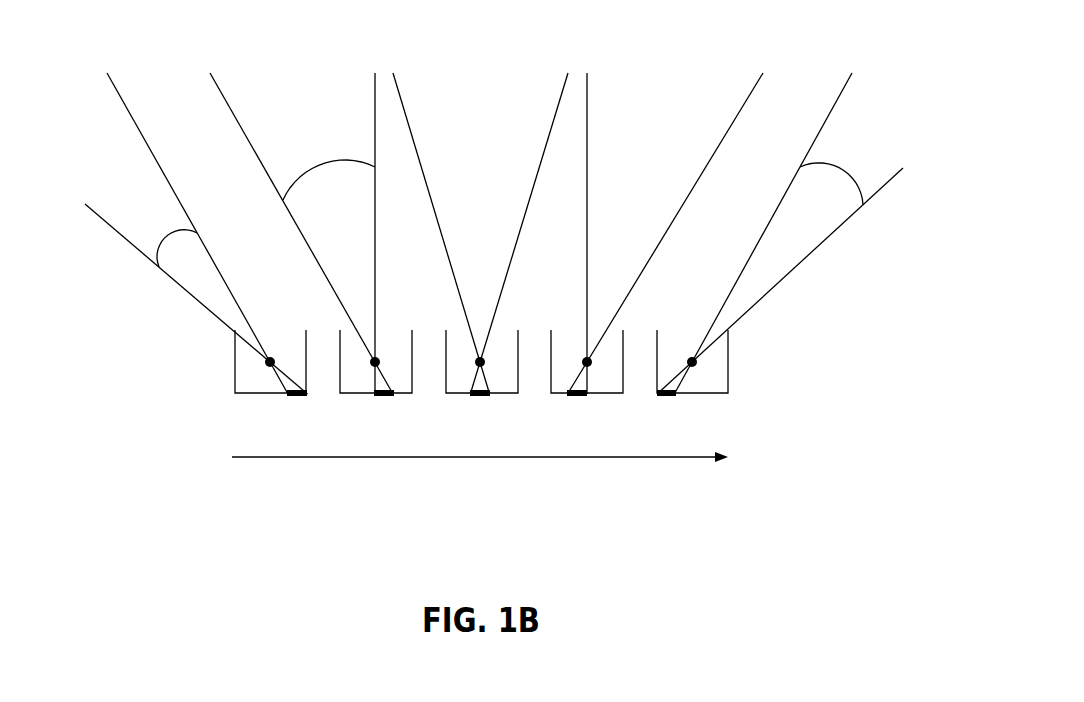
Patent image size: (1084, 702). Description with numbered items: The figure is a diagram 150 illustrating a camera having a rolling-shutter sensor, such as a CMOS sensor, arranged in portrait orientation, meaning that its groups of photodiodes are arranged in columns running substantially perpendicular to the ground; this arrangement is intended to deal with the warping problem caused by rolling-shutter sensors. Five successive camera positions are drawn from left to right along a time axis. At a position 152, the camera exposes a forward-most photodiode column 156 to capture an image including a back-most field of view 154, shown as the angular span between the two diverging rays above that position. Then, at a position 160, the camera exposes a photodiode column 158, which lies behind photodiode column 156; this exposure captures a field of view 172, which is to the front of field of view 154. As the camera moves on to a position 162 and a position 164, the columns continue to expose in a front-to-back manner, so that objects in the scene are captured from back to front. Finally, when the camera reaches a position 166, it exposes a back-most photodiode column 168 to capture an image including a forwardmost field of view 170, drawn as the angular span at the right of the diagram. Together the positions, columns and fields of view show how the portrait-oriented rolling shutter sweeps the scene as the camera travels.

The diagram 150 is at (917, 33).
The position 152 is at (233, 351).
The back-most field of view 154 is at (173, 228).
The forward-most photodiode column 156 is at (293, 396).
The photodiode column 158 is at (380, 396).
The position 160 is at (446, 379).
The position 162 is at (512, 395).
The position 164 is at (623, 375).
The position 166 is at (729, 347).
The back-most photodiode column 168 is at (663, 396).
The forwardmost field of view 170 is at (841, 162).
The field of view 172 is at (343, 160).